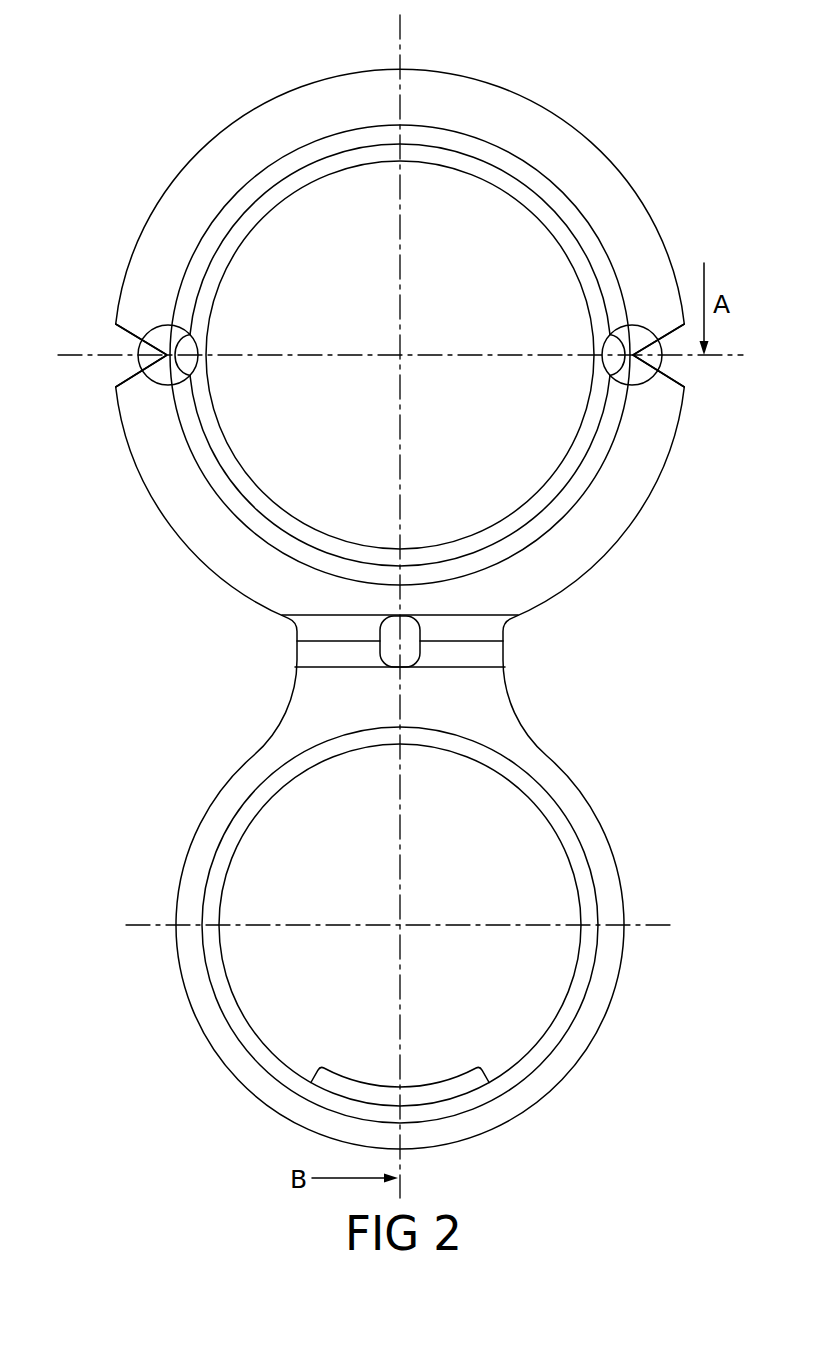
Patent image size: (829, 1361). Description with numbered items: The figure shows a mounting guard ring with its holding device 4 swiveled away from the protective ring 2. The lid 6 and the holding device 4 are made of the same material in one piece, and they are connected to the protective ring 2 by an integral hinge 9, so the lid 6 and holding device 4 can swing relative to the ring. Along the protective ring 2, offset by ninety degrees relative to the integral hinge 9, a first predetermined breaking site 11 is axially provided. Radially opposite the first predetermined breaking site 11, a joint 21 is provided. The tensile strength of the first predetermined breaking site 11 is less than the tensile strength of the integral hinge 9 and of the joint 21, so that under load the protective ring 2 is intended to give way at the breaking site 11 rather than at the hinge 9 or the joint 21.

The protective ring 2 is at (213, 133).
The joint 21 is at (167, 355).
The first predetermined breaking site 11 is at (633, 355).
The integral hinge 9 is at (282, 641).
The lid 6 is at (472, 827).
The holding device 4 is at (427, 1077).